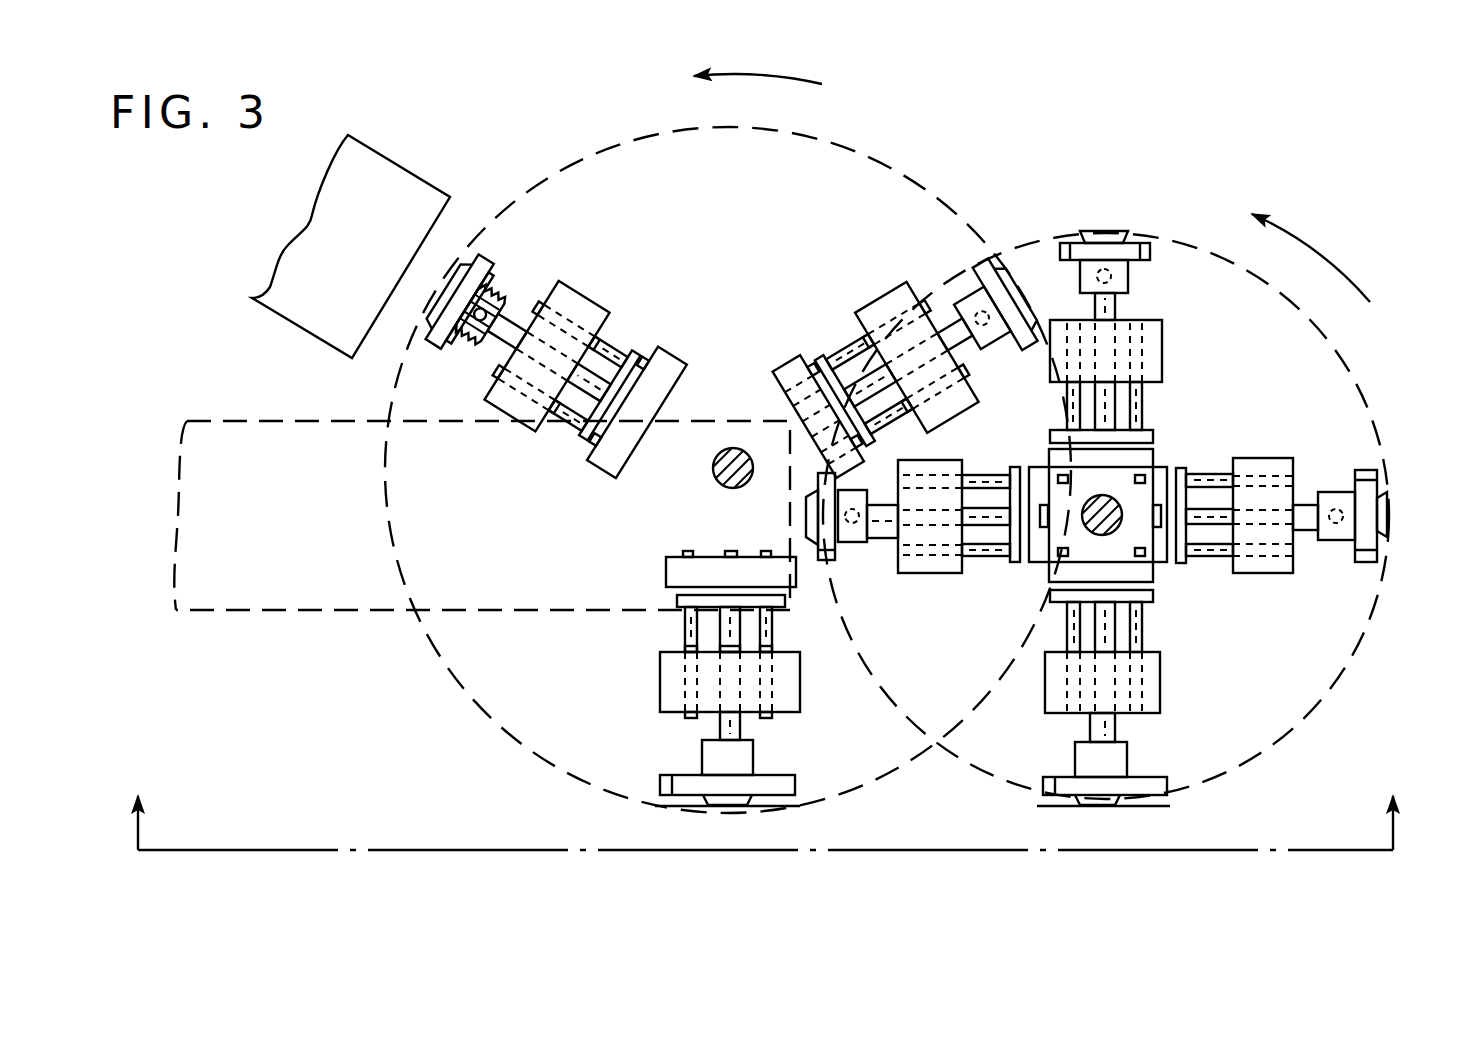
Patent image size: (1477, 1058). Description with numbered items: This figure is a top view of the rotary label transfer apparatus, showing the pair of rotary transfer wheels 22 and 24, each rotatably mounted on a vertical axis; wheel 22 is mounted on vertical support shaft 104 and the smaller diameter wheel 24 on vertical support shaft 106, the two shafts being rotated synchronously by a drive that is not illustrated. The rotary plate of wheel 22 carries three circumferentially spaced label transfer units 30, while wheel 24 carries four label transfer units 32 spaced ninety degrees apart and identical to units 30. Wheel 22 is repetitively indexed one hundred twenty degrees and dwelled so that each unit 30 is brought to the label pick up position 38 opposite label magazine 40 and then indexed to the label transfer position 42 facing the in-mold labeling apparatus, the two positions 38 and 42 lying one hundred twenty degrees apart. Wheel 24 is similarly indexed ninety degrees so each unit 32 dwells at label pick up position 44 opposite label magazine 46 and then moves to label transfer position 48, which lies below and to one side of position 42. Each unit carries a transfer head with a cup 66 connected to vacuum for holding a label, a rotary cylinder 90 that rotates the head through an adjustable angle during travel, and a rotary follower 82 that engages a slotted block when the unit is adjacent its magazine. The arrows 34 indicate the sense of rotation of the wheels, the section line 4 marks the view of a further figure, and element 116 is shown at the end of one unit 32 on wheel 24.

The section line 4- 4 is at (764, 805).
The rotary transfer wheel 22 is at (446, 669).
The rotary transfer wheel 24 is at (1352, 660).
The label transfer unit 30 is at (594, 298).
The label transfer unit 32 is at (1166, 360).
The direction of rotation 34 is at (757, 72).
The label pick up position 38 is at (494, 285).
The label magazine 40 is at (374, 160).
The label transfer position 42 is at (661, 777).
The label pick up position 44 is at (842, 555).
The label magazine 46 is at (275, 420).
The label transfer position 48 is at (1152, 773).
The cup 66 is at (440, 288).
The rotary follower 82 is at (470, 353).
The rotary cylinder 90 is at (825, 447).
The vertical support shaft 104 is at (717, 480).
The vertical support shaft 106 is at (1112, 533).
The end cap 116 is at (804, 527).